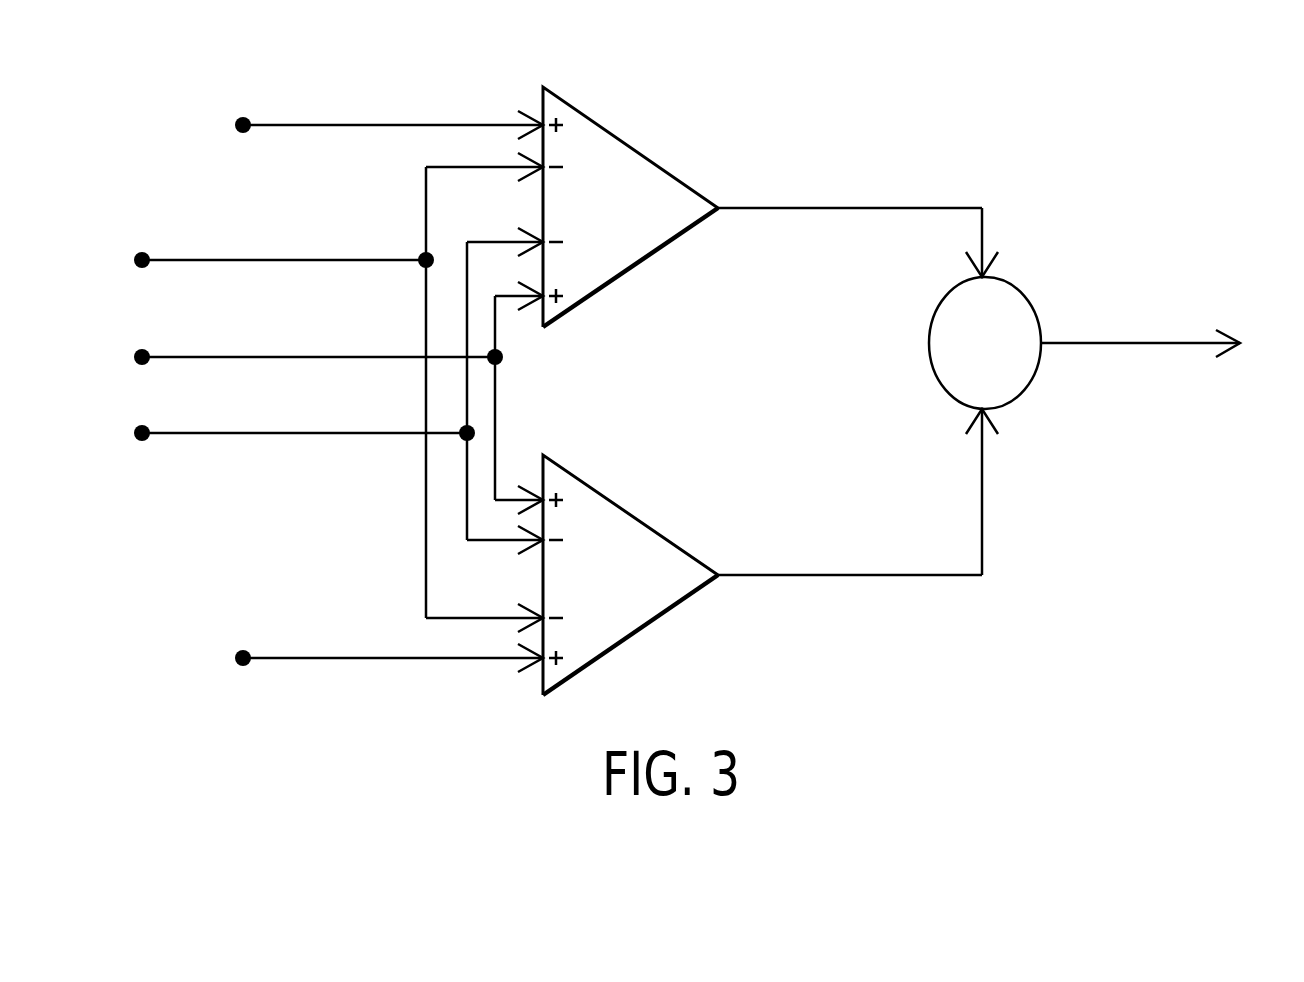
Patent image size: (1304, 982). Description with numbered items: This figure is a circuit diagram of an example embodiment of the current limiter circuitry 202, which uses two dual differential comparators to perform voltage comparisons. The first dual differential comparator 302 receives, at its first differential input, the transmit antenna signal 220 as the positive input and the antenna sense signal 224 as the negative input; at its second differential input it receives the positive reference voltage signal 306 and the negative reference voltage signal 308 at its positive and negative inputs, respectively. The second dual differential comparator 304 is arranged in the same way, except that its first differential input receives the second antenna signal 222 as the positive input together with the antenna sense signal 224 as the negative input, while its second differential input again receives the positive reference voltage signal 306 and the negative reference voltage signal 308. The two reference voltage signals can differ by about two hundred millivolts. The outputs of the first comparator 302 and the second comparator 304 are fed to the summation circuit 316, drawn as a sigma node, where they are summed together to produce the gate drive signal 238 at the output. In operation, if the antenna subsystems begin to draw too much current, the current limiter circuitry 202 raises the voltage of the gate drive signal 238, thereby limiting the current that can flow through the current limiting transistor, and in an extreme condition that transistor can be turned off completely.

The current limiter circuitry 202 is at (899, 109).
The TANT signal 220 is at (402, 124).
The ASENSE signal 224 is at (301, 260).
The positive reference voltage signal (VREF+) 306 is at (158, 363).
The negative reference voltage signal (VREF−) 308 is at (273, 436).
The SANT signal 222 is at (338, 661).
The dual differential comparator (DDC) 302 is at (626, 275).
The dual differential comparator (DDC) 304 is at (636, 516).
The summation circuit 316 is at (1017, 287).
The GDRV signal 238 is at (1127, 342).